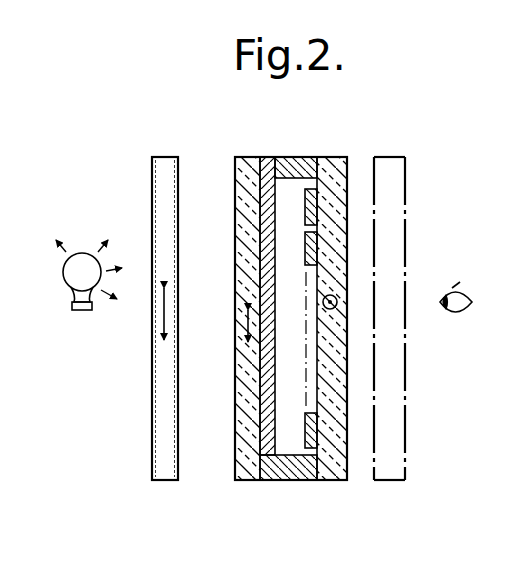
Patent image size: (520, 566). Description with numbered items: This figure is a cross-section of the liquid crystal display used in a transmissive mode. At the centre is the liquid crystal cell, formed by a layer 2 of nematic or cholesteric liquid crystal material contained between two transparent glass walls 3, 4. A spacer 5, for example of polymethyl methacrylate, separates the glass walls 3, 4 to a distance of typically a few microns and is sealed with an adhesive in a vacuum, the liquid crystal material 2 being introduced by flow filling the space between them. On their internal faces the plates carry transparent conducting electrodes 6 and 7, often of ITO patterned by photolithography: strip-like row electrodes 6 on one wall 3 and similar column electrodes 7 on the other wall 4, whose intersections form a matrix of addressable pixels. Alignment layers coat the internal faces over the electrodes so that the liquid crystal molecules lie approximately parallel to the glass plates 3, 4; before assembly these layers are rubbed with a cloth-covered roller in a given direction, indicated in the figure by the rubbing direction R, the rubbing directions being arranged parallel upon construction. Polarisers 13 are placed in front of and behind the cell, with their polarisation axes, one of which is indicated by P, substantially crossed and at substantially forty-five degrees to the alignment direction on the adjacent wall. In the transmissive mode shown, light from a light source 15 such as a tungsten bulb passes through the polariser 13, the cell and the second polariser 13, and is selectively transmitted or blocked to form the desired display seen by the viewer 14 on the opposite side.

The liquid crystal layer 2 is at (288, 442).
The glass wall 3 is at (332, 463).
The glass wall 4 is at (250, 162).
The spacer ring 5 is at (298, 162).
The row electrodes 6 is at (312, 195).
The column electrodes 7 is at (268, 163).
The polarisers 13 is at (163, 157).
The observer 14 is at (459, 287).
The light source 15 is at (82, 312).
The polarization direction P is at (175, 297).
The rubbing direction R is at (242, 330).